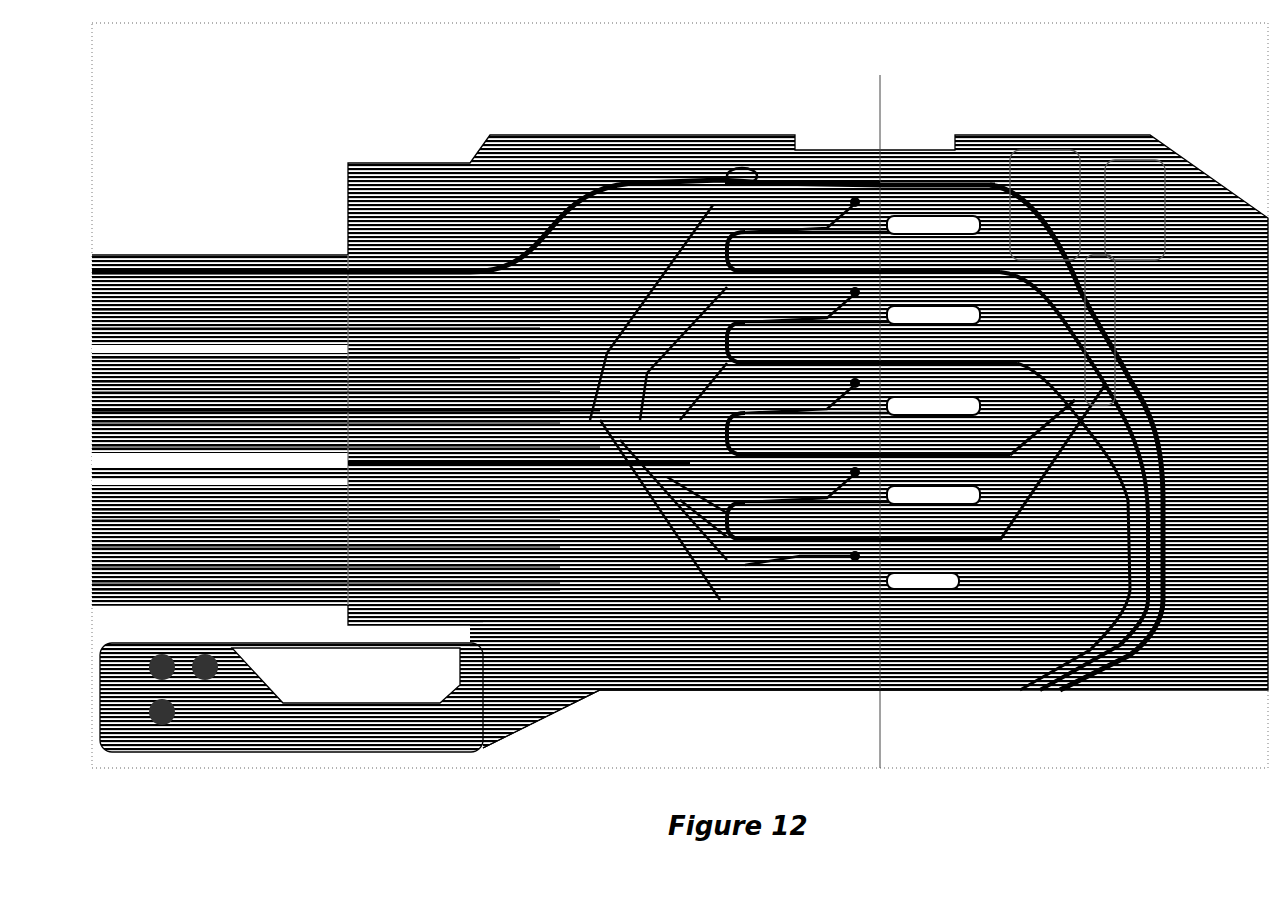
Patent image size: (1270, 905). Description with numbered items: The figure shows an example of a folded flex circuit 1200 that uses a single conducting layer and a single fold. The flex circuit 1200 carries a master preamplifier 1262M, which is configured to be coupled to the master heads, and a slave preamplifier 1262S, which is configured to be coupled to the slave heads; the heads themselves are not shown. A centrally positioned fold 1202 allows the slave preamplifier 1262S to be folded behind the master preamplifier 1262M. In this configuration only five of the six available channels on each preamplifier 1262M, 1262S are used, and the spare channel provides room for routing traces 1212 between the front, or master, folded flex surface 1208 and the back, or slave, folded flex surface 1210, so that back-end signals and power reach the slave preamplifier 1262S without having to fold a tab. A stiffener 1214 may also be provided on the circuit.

The folded flex circuit 1200 is at (993, 63).
The fold 1202 is at (680, 421).
The front (master) folded flex surface 1208 is at (557, 660).
The back (slave) folded flex surface 1210 is at (1180, 672).
The routing traces 1212 is at (741, 719).
The stiffener 1214 is at (350, 359).
The master preamplifier 1262M is at (668, 450).
The slave preamplifier 1262S is at (1092, 380).